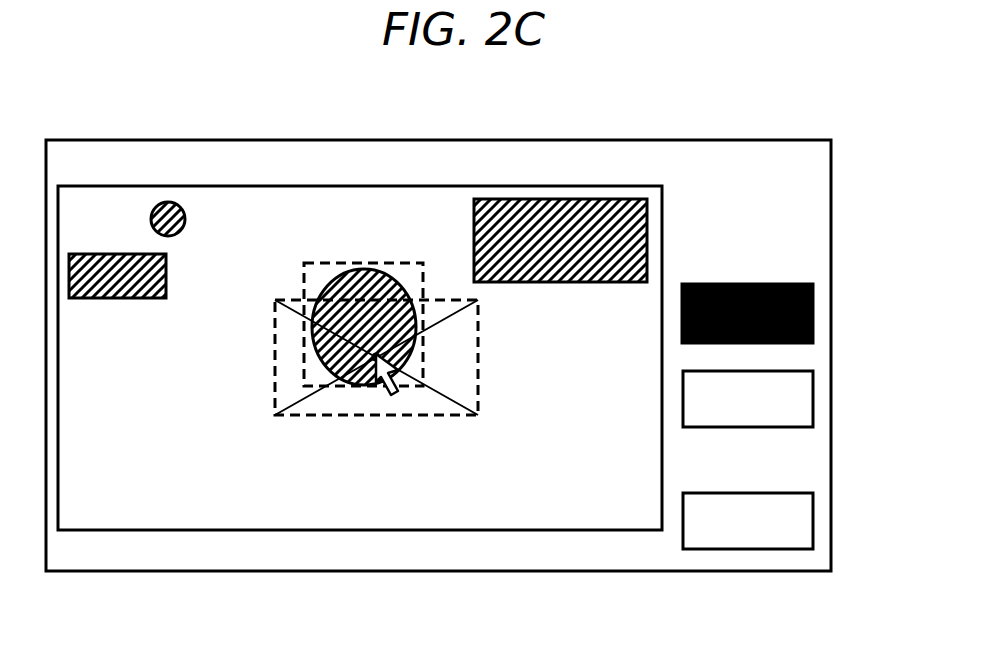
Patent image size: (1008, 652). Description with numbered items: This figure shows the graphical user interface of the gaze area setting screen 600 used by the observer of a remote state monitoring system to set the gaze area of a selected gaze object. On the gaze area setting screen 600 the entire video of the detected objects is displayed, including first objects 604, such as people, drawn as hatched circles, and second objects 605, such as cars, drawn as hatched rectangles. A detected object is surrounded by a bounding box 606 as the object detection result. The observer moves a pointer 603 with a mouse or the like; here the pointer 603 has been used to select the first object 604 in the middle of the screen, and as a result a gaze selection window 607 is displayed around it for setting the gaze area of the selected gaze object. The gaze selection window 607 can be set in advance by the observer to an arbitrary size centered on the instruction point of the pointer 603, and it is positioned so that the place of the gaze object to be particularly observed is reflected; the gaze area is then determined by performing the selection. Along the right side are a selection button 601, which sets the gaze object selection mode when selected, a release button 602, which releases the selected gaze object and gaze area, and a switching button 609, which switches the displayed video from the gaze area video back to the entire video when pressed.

The gaze area setting screen 600 is at (398, 532).
The selection button 601 is at (747, 284).
The release button 602 is at (806, 405).
The pointer 603 is at (376, 383).
The first object 604 is at (168, 202).
The second object 605 is at (537, 222).
The bounding box 606 is at (423, 285).
The gaze selection window 607 is at (425, 413).
The switching button 609 is at (806, 528).